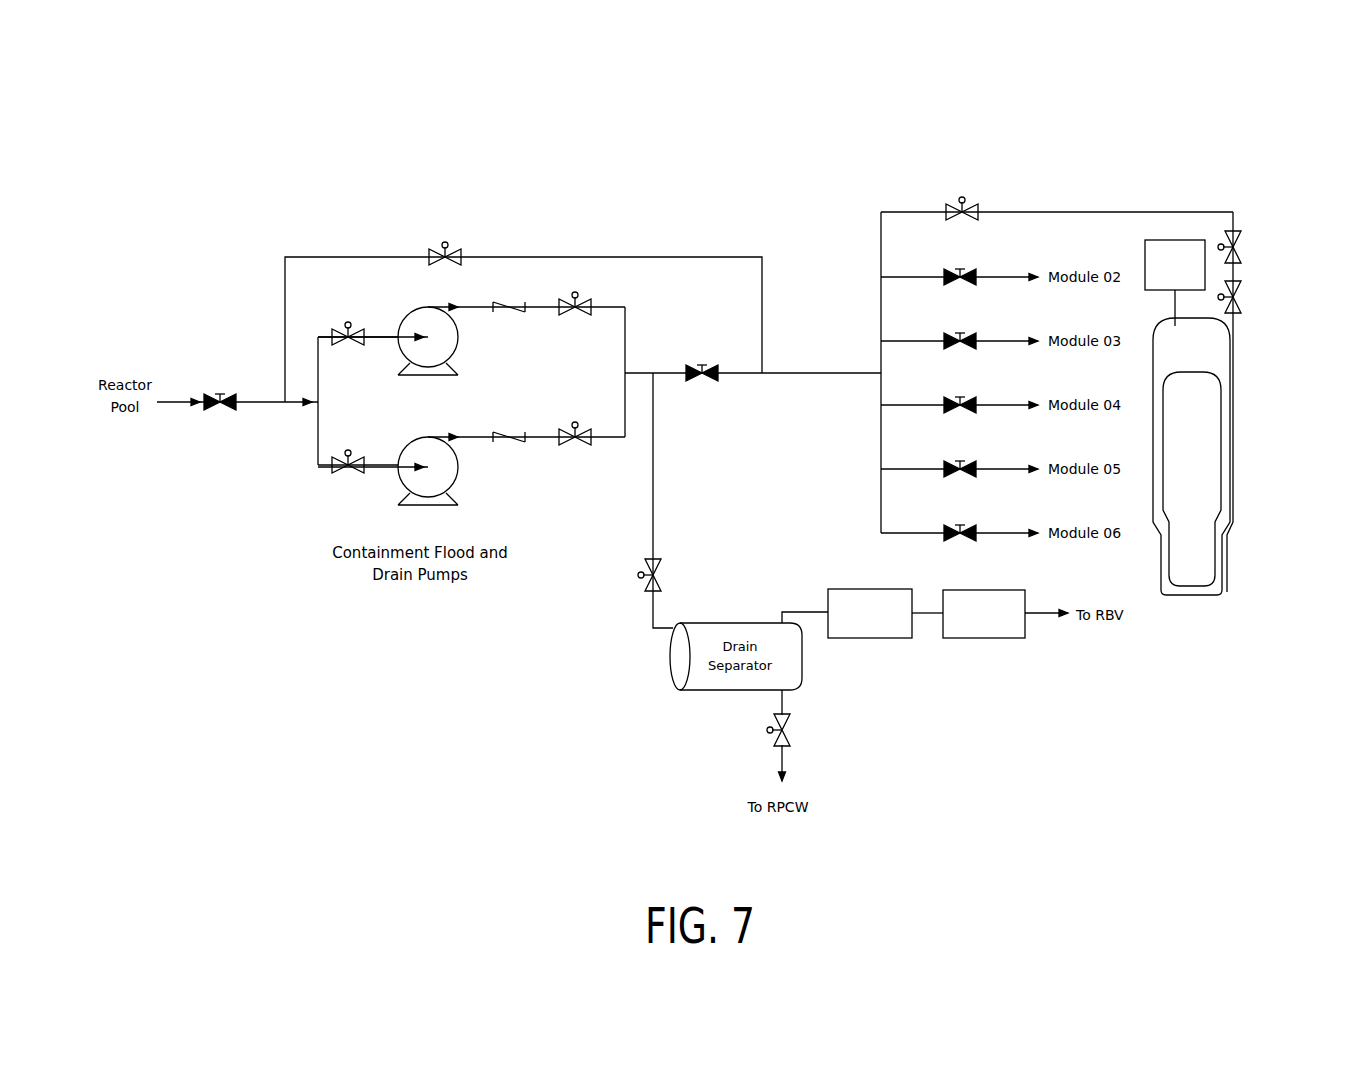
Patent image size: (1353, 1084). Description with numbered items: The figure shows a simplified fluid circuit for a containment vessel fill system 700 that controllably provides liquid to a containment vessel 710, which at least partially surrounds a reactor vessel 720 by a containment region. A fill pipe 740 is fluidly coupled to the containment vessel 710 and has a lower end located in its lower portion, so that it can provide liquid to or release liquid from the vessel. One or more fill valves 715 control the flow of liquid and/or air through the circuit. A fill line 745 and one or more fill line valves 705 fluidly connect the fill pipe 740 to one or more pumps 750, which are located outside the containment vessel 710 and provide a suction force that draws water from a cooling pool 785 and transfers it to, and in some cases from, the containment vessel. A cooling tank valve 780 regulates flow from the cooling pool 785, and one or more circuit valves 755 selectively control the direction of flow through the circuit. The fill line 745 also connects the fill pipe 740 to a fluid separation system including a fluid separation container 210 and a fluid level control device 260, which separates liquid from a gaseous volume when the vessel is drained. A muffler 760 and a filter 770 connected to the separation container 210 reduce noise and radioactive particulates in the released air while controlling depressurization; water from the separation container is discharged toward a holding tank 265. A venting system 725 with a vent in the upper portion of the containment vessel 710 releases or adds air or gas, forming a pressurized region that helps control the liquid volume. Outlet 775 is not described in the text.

The containment vessel fill system 700 is at (1204, 144).
The fill line valve 705 is at (948, 206).
The containment vessel 710 is at (1169, 598).
The fill valve 715 is at (1237, 280).
The reactor vessel 720 is at (1192, 479).
The venting system 725 is at (1175, 265).
The fill pipe 740 is at (1234, 356).
The fill line 745 is at (1120, 210).
The pump 750 is at (456, 472).
The circuit valve 755 is at (702, 382).
The muffler 760 is at (862, 640).
The filter 770 is at (982, 640).
The vent line to RBV 775 is at (1040, 616).
The cooling tank valve 780 is at (222, 410).
The cooling pool 785 is at (166, 398).
The fluid separation container 210 is at (740, 622).
The fluid level control device 260 is at (776, 733).
The holding tank 265 is at (784, 758).